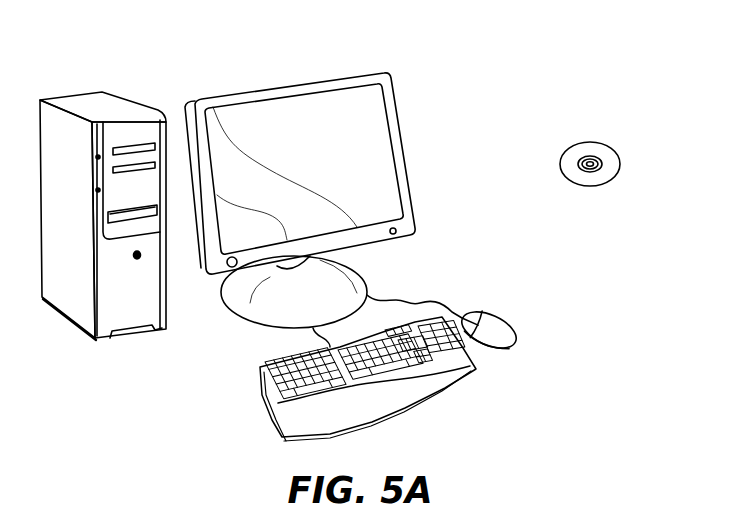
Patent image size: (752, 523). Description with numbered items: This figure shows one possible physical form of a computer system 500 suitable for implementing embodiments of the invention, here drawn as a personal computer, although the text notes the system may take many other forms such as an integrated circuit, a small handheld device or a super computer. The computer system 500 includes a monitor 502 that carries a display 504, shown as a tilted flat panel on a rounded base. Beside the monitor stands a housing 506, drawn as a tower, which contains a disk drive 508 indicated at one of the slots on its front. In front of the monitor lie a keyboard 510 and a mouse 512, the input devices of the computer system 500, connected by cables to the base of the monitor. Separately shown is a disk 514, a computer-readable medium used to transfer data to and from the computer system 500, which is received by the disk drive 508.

The computer system 500 is at (517, 58).
The monitor 502 is at (407, 172).
The display 504 is at (367, 112).
The housing 506 is at (92, 103).
The disk drive 508 is at (143, 212).
The keyboard 510 is at (267, 403).
The mouse 512 is at (508, 330).
The disk 514 is at (610, 142).